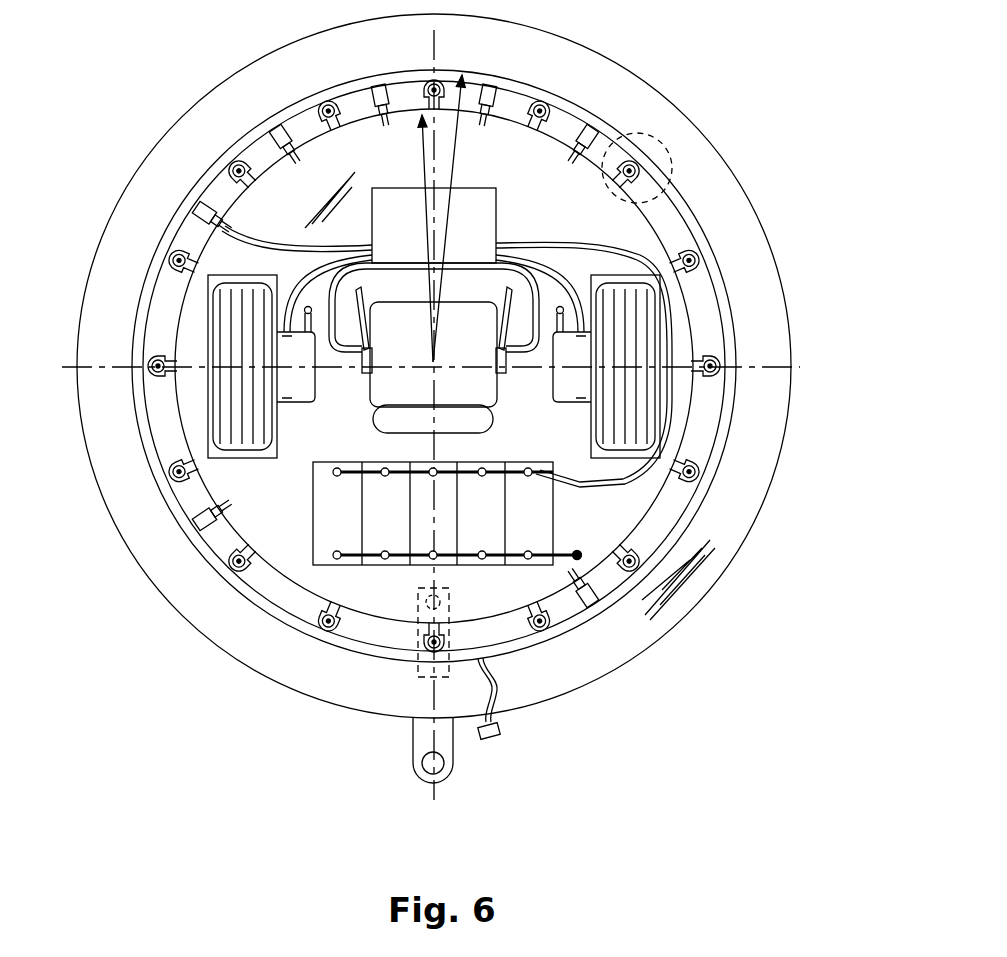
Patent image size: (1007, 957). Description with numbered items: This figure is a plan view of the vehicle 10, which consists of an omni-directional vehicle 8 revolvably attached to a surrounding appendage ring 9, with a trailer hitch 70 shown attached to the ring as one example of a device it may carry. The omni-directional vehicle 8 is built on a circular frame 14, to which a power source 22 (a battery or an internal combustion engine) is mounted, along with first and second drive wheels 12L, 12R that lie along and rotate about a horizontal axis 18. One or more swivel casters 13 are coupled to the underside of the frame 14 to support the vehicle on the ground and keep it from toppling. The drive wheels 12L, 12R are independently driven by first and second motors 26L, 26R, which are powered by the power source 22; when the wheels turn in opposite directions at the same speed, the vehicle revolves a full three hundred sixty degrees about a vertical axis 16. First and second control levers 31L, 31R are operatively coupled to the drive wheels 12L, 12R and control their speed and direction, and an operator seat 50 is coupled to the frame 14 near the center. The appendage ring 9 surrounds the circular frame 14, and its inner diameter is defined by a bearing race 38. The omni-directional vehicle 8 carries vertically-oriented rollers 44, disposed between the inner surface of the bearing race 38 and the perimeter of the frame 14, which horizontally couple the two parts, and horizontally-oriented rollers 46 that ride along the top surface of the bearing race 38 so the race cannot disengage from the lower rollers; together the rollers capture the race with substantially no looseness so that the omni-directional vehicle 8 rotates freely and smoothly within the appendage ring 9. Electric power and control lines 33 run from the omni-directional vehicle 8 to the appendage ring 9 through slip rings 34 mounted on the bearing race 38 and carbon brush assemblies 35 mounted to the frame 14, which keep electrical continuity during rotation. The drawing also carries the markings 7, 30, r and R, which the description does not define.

The vehicle 10 is at (178, 722).
The horizontal axis 18 is at (797, 367).
The bearing race 38 is at (580, 630).
The slip rings 34 is at (163, 281).
The circular frame 14 is at (683, 292).
The omni-directional vehicle 8 is at (503, 130).
The section 7 is at (697, 152).
The horizontally-oriented rollers 46 is at (602, 613).
The carbon brush assemblies 35 is at (207, 213).
The electric power and control lines 33 is at (257, 240).
The control box 30 is at (500, 228).
The vertical axis 16 is at (437, 360).
The operator seat 50 is at (497, 407).
The first control lever 31L is at (361, 292).
The second control lever 31R is at (507, 293).
The first drive wheel 12L is at (247, 458).
The second drive wheel 12R is at (633, 452).
The first motor 26L is at (298, 403).
The second motor 26R is at (583, 403).
The power source 22 is at (555, 515).
The swivel casters 13 is at (449, 605).
The vertically-oriented rollers 44 is at (333, 625).
The trailer hitch 70 is at (453, 742).
The inner radius r is at (404, 150).
The outer radius R is at (470, 167).
The appendage ring 9 is at (133, 530).